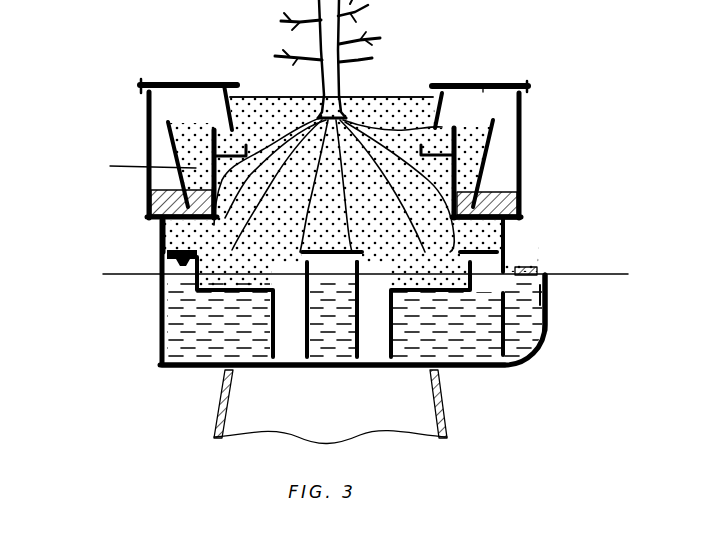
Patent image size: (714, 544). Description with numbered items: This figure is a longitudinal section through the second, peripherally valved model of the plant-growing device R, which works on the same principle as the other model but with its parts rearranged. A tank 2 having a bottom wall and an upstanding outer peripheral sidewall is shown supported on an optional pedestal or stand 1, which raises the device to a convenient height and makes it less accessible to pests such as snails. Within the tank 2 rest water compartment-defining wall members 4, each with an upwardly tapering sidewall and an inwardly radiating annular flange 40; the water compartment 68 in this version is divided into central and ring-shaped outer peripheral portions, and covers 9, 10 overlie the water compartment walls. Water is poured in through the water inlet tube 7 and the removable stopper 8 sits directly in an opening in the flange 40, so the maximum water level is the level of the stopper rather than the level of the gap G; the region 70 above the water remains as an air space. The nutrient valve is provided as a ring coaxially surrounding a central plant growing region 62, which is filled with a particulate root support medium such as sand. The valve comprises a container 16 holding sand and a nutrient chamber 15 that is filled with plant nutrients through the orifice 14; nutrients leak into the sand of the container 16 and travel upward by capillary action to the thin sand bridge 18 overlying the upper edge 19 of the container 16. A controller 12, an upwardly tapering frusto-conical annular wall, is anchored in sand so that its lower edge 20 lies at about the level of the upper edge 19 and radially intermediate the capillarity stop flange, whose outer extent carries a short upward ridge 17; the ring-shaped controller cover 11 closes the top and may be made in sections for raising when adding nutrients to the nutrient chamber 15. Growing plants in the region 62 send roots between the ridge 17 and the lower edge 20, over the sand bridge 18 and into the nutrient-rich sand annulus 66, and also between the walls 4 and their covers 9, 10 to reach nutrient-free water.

The pedestal or stand 1 is at (443, 400).
The tank 2 is at (160, 308).
The water compartment-defining wall member 4 is at (164, 279).
The water inlet tube 7 is at (527, 315).
The removable stopper 8 is at (526, 268).
The cover 9 is at (323, 248).
The cover 10 is at (172, 250).
The controller cover 11 is at (148, 87).
The controller 12 is at (230, 108).
The orifice 14 is at (190, 168).
The nutrient chamber 15 is at (152, 200).
The container 16 is at (216, 178).
The ridge 17 is at (247, 150).
The sand bridge 18 is at (339, 91).
The upper edge of the container 19 is at (218, 82).
The lower edge of the controller 20 is at (334, 176).
The annular flange 40 is at (545, 275).
The plant growing region 62 is at (350, 106).
The nutrient-rich sand annulus 66 is at (136, 168).
The water compartment 68 is at (334, 370).
The air space 70 is at (161, 268).
The gap G is at (522, 222).
The plant-growing device R is at (100, 143).